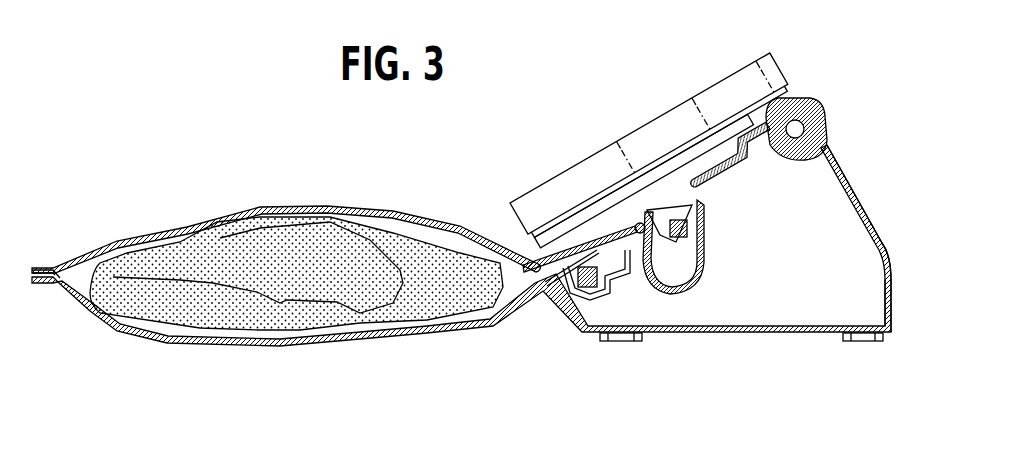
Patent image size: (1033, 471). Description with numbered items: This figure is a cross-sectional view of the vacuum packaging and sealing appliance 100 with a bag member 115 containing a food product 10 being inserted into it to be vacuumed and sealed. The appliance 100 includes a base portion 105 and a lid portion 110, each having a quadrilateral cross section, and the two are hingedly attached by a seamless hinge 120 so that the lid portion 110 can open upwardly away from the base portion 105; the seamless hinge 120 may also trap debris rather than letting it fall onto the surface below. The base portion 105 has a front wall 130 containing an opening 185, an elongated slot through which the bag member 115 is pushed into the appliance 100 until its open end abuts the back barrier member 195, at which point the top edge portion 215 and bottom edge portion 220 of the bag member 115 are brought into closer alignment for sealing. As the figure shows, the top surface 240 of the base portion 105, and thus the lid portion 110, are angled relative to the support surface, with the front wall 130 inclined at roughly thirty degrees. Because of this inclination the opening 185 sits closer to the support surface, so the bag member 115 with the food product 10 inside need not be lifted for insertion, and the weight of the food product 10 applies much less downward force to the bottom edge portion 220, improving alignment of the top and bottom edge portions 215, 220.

The food product 10 is at (198, 240).
The vacuum packaging and sealing appliance 100 is at (842, 180).
The base portion 105 is at (887, 262).
The lid portion 110 is at (683, 104).
The bag member 115 is at (113, 240).
The seamless hinge 120 is at (805, 118).
The front wall 130 is at (567, 305).
The opening 185 is at (546, 290).
The back barrier member 195 is at (717, 238).
The top edge portion 215 is at (668, 300).
The bottom edge portion 220 is at (628, 284).
The top surface 240 is at (590, 212).